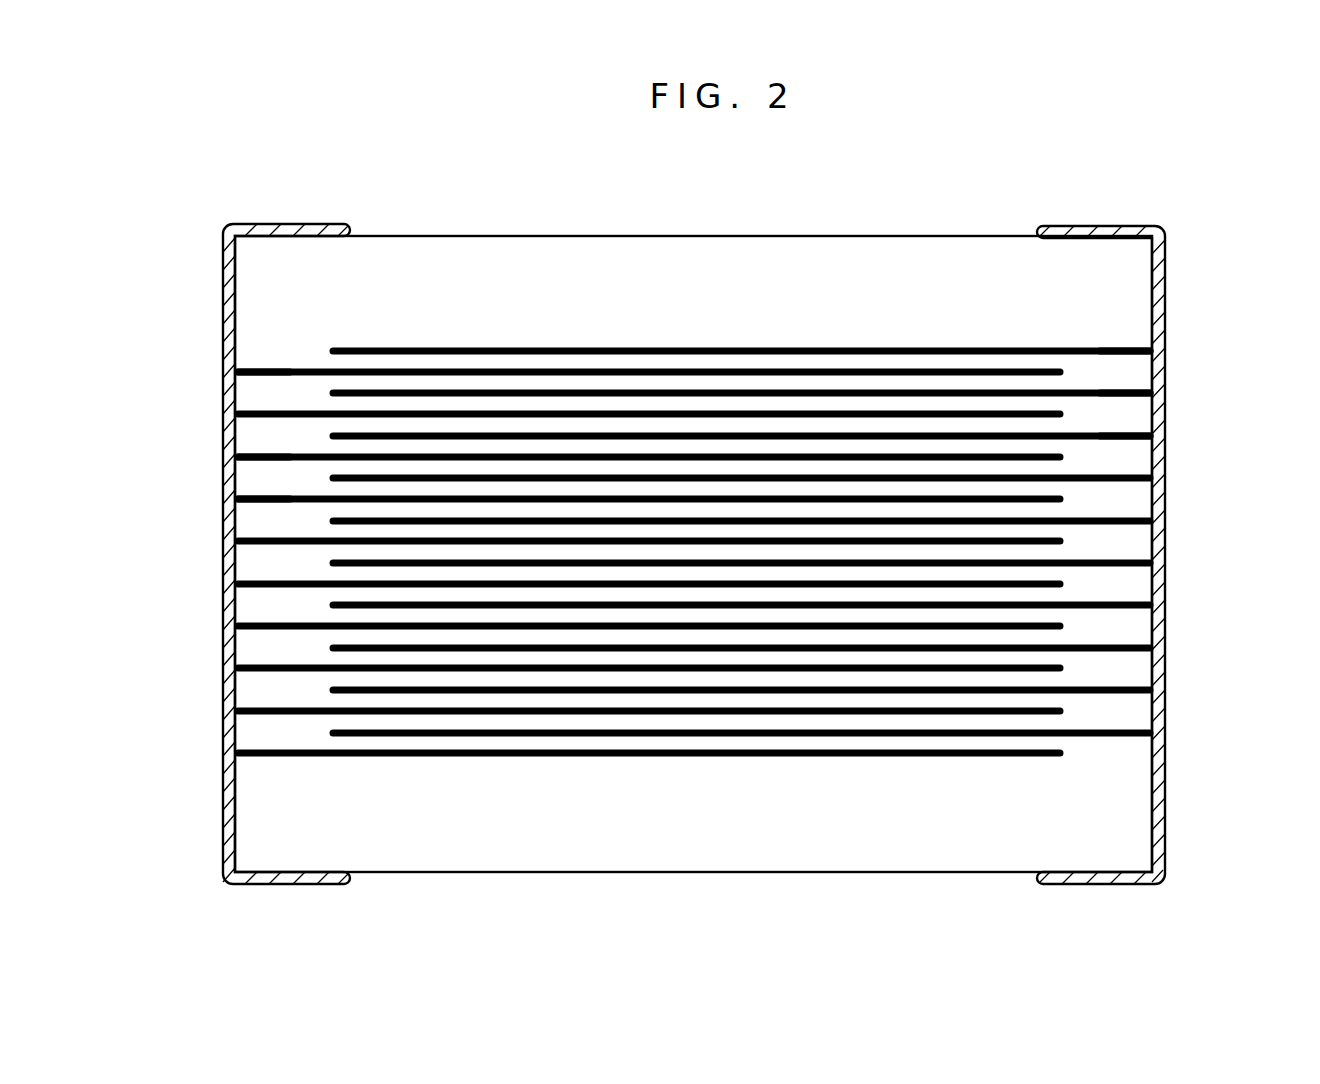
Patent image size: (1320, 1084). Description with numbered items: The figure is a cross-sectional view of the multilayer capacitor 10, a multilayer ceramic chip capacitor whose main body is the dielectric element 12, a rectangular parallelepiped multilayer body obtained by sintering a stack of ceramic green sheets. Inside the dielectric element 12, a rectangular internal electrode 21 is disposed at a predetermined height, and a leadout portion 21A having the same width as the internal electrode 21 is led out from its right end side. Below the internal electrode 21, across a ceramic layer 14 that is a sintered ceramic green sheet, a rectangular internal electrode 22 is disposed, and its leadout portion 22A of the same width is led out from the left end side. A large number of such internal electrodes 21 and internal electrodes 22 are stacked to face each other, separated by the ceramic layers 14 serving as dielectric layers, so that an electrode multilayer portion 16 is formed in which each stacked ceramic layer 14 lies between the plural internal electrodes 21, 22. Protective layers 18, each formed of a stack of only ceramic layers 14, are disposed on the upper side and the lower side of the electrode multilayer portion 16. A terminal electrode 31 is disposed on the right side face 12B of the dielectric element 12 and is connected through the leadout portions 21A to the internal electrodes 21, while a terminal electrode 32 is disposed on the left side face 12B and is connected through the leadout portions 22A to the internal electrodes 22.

The multilayer capacitor 10 is at (1176, 221).
The dielectric element 12 is at (980, 236).
The side face 12B is at (230, 518).
The ceramic layer 14 is at (352, 742).
The electrode multilayer portion 16 is at (462, 762).
The protective layer 18 is at (707, 290).
The internal electrode 21 is at (869, 436).
The leadout portion 21A is at (1100, 437).
The internal electrode 22 is at (500, 457).
The leadout portion 22A is at (275, 497).
The terminal electrode 31 is at (1167, 302).
The terminal electrode 32 is at (230, 328).